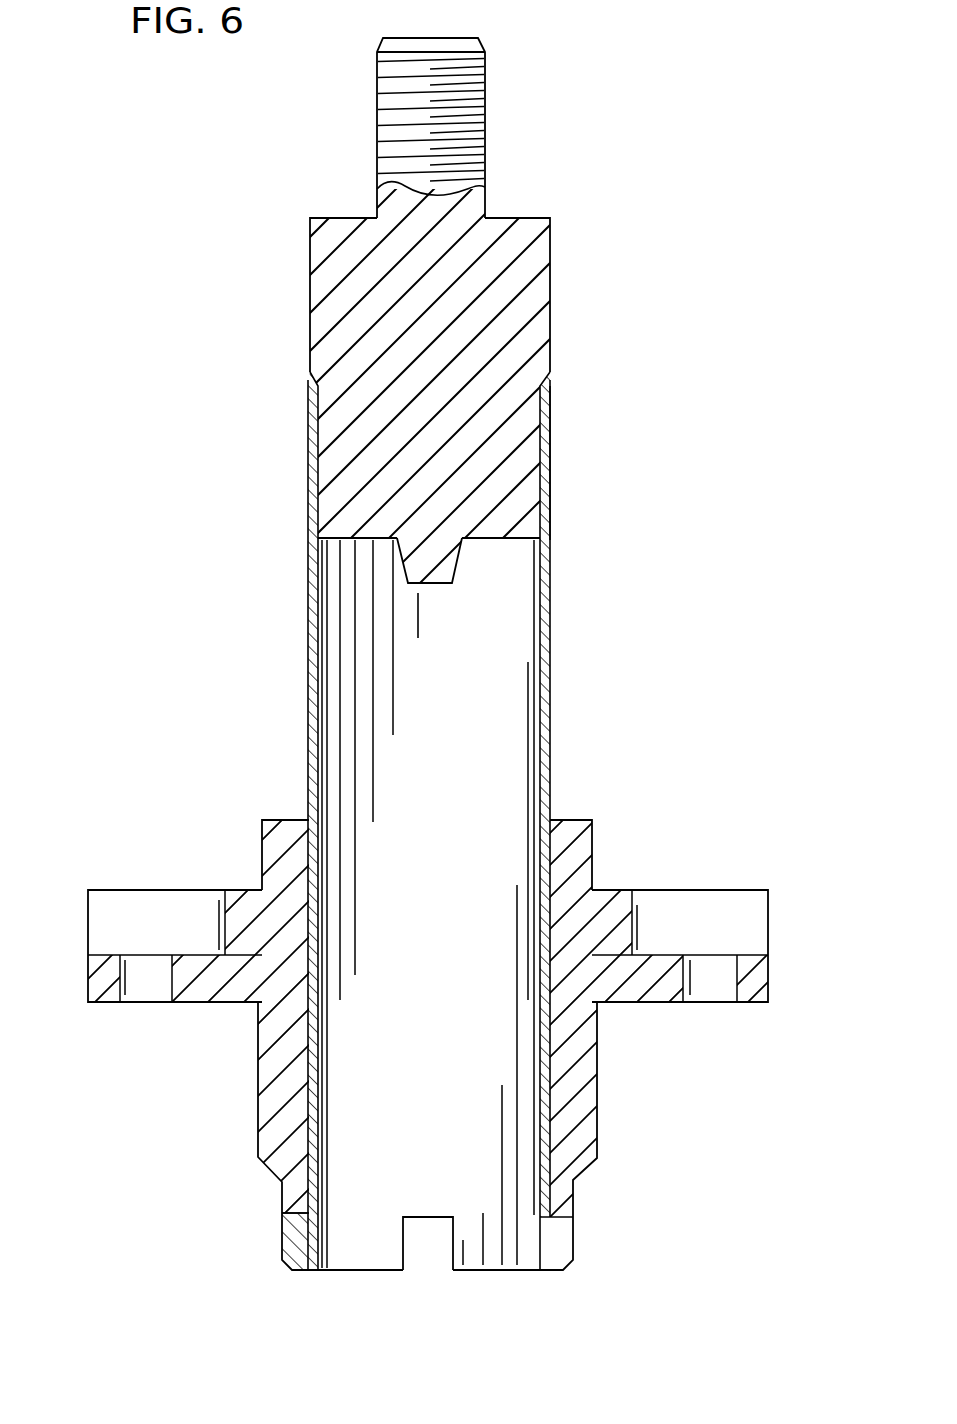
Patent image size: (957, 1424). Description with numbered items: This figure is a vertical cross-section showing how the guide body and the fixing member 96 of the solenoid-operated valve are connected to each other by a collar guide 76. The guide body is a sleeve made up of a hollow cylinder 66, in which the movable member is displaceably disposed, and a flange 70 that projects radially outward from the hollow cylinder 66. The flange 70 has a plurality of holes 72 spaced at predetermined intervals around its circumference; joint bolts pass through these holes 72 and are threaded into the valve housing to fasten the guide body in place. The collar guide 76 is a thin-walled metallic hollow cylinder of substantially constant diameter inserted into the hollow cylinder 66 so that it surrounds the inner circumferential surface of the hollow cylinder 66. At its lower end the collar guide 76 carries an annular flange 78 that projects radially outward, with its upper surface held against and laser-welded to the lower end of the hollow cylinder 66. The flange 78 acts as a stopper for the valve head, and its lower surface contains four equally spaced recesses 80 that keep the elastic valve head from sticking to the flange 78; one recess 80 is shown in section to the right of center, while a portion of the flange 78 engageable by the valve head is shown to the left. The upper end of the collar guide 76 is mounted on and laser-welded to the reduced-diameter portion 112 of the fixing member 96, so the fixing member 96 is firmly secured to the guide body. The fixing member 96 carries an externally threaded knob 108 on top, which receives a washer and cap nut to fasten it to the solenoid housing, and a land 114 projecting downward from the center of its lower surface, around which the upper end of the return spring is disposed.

The externally threaded knob 108 is at (478, 92).
The fixing member 96 is at (545, 299).
The reduced-diameter portion 112 is at (550, 453).
The land 114 is at (437, 584).
The collar guide 76 is at (308, 617).
The hollow cylinder 66 is at (583, 1124).
The flange 70 is at (100, 983).
The holes 72 is at (128, 985).
The annular flange 78 is at (295, 1246).
The recesses 80 is at (555, 1218).